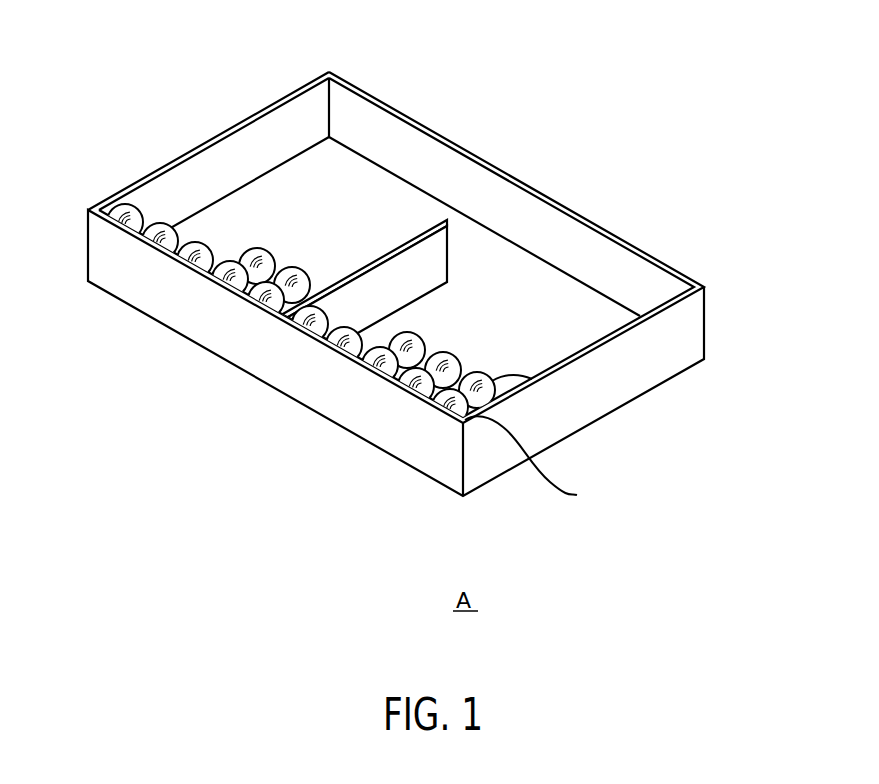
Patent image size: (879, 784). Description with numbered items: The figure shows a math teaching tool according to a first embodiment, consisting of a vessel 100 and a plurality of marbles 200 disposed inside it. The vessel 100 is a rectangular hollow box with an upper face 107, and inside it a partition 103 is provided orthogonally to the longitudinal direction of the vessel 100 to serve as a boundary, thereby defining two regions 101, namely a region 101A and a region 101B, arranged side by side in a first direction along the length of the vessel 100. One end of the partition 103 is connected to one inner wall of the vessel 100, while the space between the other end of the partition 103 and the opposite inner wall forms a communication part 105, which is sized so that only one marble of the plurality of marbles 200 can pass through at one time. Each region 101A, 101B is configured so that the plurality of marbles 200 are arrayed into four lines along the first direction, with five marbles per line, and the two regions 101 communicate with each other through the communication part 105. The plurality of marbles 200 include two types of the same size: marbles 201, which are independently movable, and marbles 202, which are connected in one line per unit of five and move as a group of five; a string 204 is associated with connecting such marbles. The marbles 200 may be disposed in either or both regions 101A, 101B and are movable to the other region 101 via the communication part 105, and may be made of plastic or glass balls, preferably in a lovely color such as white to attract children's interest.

The vessel 100 is at (642, 375).
The region 101 is at (278, 205).
The region 101A is at (246, 203).
The region 101B is at (484, 228).
The partition 103 is at (415, 275).
The communication part 105 is at (462, 230).
The upper face 107 is at (273, 104).
The plurality of marbles 200 is at (212, 233).
The marble 201 is at (530, 378).
The marble 202 is at (387, 367).
The string 204 is at (556, 484).